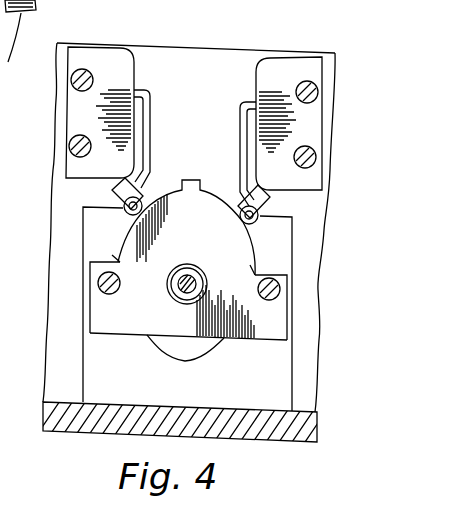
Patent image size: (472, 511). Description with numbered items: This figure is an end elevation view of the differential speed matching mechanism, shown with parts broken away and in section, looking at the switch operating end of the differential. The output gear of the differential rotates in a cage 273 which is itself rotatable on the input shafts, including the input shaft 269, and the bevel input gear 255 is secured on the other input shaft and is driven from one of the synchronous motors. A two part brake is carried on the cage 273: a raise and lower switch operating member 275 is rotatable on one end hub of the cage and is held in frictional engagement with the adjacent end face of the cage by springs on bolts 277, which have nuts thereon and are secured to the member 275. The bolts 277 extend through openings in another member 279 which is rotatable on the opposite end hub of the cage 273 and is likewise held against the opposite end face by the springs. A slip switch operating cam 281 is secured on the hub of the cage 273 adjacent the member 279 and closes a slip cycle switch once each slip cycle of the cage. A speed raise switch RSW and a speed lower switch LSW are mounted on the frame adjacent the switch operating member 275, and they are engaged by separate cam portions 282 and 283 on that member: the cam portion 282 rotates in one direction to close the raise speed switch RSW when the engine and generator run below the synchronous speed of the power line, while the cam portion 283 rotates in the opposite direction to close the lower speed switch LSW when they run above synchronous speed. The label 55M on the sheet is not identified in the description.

The mounting plate 55M is at (213, 66).
The speed lower switch LSW is at (113, 64).
The speed raise switch RSW is at (287, 68).
The cam portion 283 is at (165, 200).
The cam portion 282 is at (226, 200).
The member 279 is at (118, 259).
The raise and lower switch operating member 275 is at (100, 334).
The bolts 277 is at (112, 292).
The cage 273 is at (199, 275).
The input shaft 269 is at (188, 277).
The slip switch operating cam 281 is at (202, 340).
The bevel input gear 255 is at (285, 436).